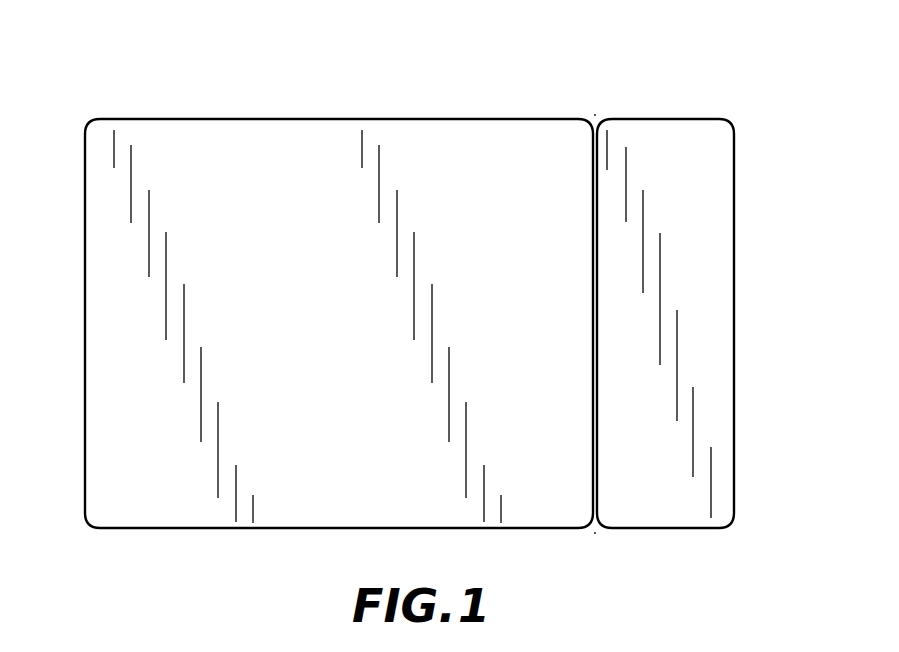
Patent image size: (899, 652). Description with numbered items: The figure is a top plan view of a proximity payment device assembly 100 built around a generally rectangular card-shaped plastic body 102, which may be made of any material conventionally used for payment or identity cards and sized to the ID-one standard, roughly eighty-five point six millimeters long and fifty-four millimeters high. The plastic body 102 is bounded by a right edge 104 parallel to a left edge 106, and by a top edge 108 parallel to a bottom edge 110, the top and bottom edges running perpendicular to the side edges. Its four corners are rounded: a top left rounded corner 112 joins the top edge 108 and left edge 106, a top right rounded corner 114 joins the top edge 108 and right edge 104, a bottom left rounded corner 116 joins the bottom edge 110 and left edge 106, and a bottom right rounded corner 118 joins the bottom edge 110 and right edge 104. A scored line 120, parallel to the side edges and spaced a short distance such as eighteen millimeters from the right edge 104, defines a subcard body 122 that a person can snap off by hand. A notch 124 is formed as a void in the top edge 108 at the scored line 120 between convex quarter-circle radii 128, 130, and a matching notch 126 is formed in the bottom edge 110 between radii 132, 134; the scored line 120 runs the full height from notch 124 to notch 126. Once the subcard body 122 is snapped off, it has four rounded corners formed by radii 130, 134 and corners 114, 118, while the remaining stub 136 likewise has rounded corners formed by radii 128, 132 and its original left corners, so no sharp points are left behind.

The proximity payment device assembly 100 is at (713, 67).
The plastic body 102 is at (349, 118).
The right edge 104 is at (735, 250).
The left edge 106 is at (85, 267).
The top edge 108 is at (143, 118).
The bottom edge 110 is at (318, 529).
The top left rounded corner 112 is at (92, 119).
The top right rounded corner 114 is at (730, 121).
The bottom left rounded corner 116 is at (90, 529).
The bottom right rounded corner 118 is at (728, 530).
The scored line 120 is at (592, 175).
The subcard body 122 is at (708, 302).
The notch 124 is at (595, 112).
The notch 126 is at (595, 536).
The convex quarter-circle radius 128 is at (592, 120).
The convex quarter-circle radius 130 is at (604, 120).
The convex quarter-circle radius 132 is at (588, 530).
The convex quarter-circle radius 134 is at (602, 530).
The stub 136 is at (115, 401).